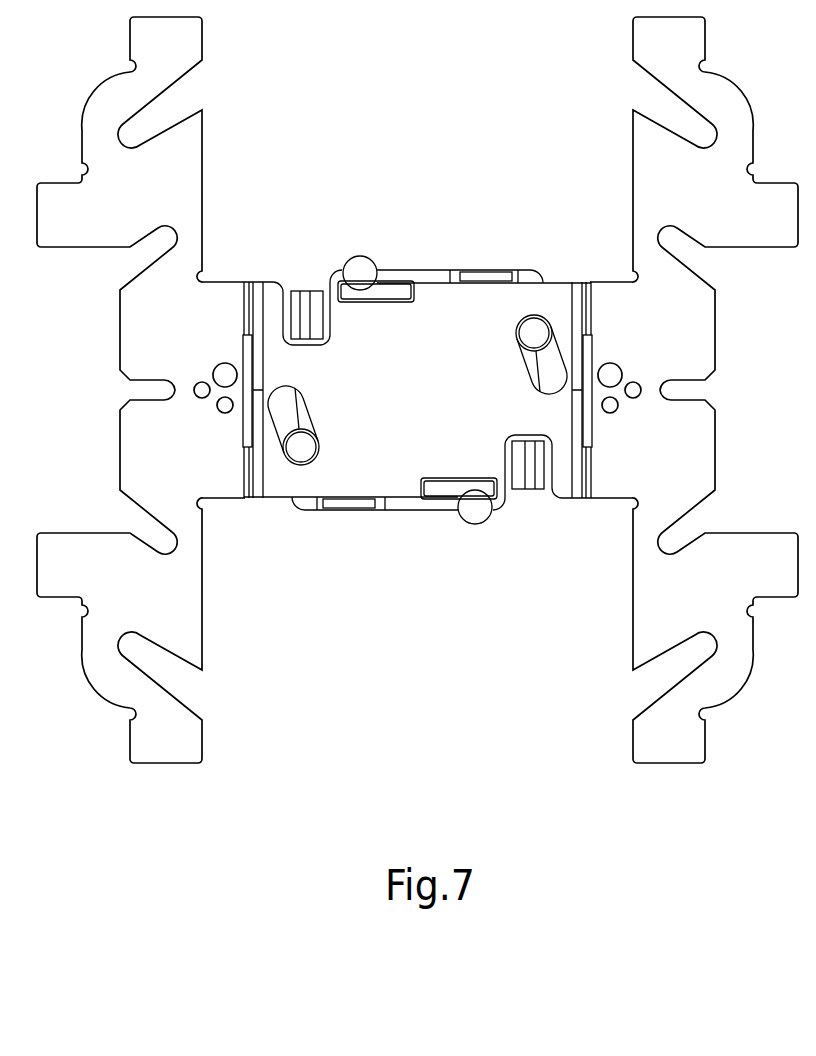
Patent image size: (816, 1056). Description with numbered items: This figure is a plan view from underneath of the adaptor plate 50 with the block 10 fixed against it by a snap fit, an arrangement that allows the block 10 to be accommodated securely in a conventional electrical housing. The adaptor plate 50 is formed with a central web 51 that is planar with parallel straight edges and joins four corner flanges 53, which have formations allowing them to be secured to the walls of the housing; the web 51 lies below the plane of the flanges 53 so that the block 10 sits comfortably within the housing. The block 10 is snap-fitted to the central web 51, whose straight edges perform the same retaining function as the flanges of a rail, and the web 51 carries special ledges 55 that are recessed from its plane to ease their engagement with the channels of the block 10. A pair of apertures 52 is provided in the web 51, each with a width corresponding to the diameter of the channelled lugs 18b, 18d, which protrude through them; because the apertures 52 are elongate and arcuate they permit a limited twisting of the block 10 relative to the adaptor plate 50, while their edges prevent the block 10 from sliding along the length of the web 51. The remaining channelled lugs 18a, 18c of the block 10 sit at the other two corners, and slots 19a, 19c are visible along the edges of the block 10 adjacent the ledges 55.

The block 10 is at (412, 268).
The channelled lug 18a is at (357, 272).
The channelled lug 18b is at (535, 323).
The channelled lug 18c is at (477, 512).
The channelled lug 18d is at (294, 452).
The slot 19a is at (485, 277).
The slot 19c is at (342, 506).
The adaptor plate 50 is at (202, 606).
The central web 51 is at (429, 400).
The aperture 52 is at (523, 360).
The corner flange 53 is at (188, 152).
The ledge 55 is at (388, 296).